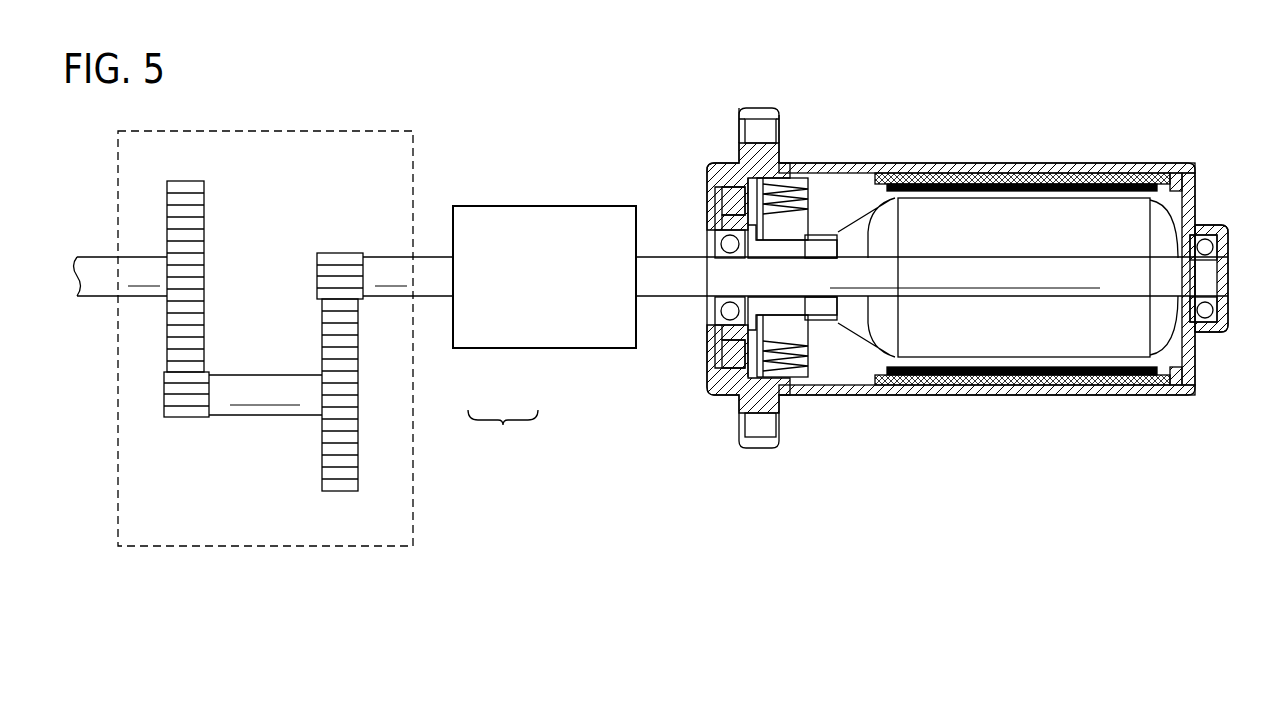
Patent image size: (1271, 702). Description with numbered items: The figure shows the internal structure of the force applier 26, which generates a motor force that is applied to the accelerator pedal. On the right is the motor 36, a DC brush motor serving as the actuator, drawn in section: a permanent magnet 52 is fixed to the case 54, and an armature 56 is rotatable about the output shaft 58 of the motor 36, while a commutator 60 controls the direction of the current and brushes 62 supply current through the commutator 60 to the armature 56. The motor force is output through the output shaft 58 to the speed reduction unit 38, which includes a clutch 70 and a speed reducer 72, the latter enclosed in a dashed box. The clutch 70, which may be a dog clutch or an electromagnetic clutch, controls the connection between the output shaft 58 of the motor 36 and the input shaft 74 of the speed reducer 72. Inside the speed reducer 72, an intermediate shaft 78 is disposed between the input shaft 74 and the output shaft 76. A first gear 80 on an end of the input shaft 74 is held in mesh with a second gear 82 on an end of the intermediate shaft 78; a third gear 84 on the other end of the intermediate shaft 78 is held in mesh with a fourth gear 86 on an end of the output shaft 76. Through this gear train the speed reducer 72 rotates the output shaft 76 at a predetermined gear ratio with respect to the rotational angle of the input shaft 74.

The force applier 26 is at (718, 512).
The motor 36 is at (1077, 163).
The speed reduction unit 38 is at (503, 430).
The permanent magnet 52 is at (1136, 385).
The case 54 is at (1066, 393).
The armature 56 is at (1012, 202).
The output shaft 58 is at (675, 296).
The commutator 60 is at (823, 317).
The brushes 62 is at (797, 222).
The clutch 70 is at (529, 348).
The speed reducer 72 is at (413, 408).
The input shaft 74 is at (392, 296).
The output shaft 76 is at (141, 296).
The intermediate shaft 78 is at (262, 415).
The first gear 80 is at (338, 253).
The second gear 82 is at (338, 491).
The third gear 84 is at (184, 417).
The fourth gear 86 is at (188, 181).